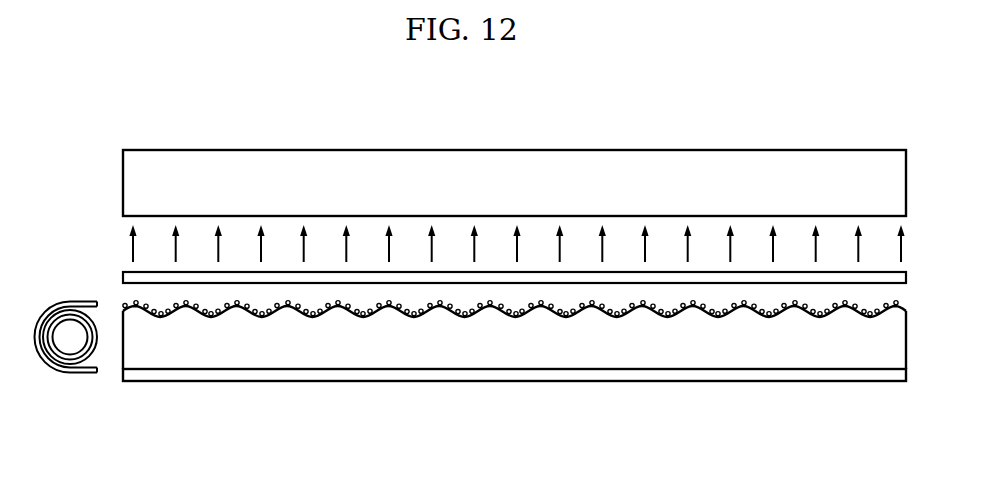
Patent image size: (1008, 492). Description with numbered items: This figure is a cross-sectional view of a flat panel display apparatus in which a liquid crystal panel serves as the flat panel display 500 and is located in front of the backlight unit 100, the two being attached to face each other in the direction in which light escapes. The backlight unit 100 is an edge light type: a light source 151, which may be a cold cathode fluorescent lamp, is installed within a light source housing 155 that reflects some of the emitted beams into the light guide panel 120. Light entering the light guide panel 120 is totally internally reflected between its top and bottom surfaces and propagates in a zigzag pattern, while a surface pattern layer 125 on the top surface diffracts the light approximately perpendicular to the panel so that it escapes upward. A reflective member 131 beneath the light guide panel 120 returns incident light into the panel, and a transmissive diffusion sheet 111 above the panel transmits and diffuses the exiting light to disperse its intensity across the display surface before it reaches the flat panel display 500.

The flat panel display 500 is at (133, 184).
The transmissive diffusion sheet 111 is at (133, 278).
The light source 151 is at (68, 347).
The light source housing 155 is at (88, 370).
The backlight unit 100 is at (506, 386).
The light guide panel 120 is at (883, 355).
The reflective member 131 is at (553, 375).
The surface pattern layer 125 is at (692, 314).